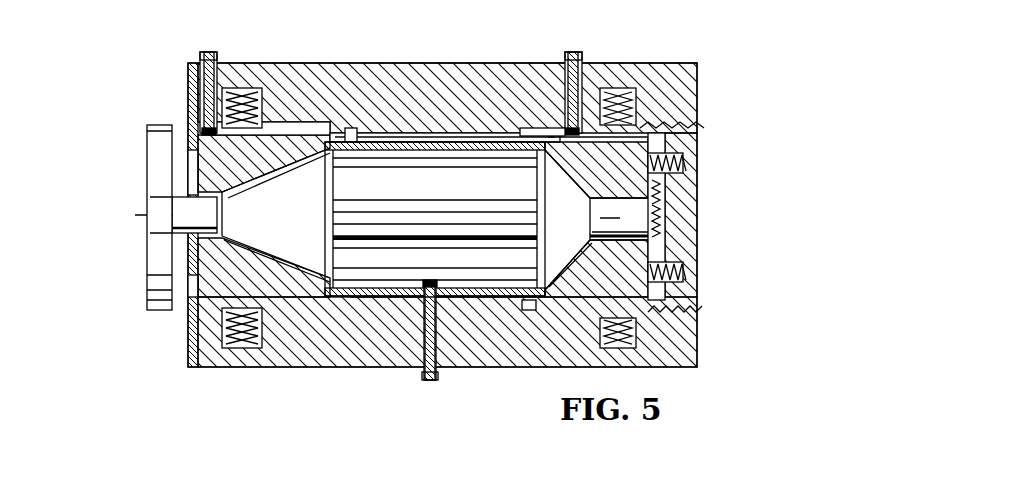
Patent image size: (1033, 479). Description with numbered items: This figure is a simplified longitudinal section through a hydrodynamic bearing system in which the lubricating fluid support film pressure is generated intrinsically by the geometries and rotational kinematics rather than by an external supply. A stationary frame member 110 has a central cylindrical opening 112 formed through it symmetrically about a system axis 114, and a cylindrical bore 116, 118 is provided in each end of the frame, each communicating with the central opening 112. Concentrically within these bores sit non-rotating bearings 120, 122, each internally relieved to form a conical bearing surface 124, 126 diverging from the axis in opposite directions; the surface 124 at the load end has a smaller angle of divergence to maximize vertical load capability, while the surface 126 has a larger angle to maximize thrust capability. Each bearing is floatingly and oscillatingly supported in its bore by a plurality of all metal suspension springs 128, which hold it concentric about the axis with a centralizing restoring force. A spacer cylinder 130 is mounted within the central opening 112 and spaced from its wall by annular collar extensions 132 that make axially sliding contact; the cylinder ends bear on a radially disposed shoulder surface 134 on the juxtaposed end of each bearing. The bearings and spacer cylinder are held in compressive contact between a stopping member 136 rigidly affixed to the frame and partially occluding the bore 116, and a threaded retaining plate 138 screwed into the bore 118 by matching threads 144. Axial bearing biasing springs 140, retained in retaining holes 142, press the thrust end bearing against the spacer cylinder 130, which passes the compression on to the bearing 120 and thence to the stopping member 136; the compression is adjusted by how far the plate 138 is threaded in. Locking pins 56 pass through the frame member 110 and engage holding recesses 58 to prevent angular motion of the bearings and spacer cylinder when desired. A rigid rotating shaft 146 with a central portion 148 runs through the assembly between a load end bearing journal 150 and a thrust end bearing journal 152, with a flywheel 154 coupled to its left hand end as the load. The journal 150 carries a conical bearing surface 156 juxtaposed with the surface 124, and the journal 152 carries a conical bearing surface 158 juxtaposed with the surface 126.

The locking pin 56 is at (208, 52).
The holding recess 58 is at (218, 136).
The stationary frame member 110 is at (372, 62).
The central cylindrical opening 112 is at (450, 300).
The system axis 114 is at (104, 217).
The cylindrical bore 116 is at (296, 133).
The cylindrical bore 118 is at (562, 128).
The non-rotating bearing 120 is at (258, 168).
The non-rotating bearing 122 is at (625, 169).
The conical bearing surface 124 is at (270, 180).
The conical bearing surface 126 is at (575, 275).
The suspension spring 128 is at (236, 100).
The spacer cylinder 130 is at (425, 142).
The annular collar extension 132 is at (390, 137).
The shoulder surface 134 is at (352, 128).
The stopping member 136 is at (186, 98).
The threaded retaining plate 138 is at (697, 220).
The axial bearing biasing spring 140 is at (666, 200).
The retaining hole 142 is at (683, 165).
The matching thread 144 is at (660, 125).
The rotating shaft 146 is at (411, 200).
The central portion 148 is at (462, 222).
The load end bearing journal 150 is at (290, 218).
The thrust end bearing journal 152 is at (580, 221).
The flywheel 154 is at (147, 305).
The conical bearing surface 156 is at (265, 180).
The conical bearing surface 158 is at (566, 220).